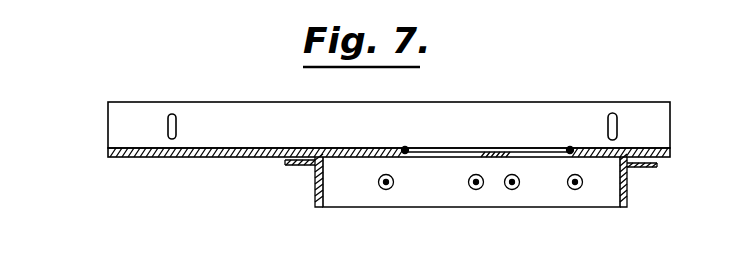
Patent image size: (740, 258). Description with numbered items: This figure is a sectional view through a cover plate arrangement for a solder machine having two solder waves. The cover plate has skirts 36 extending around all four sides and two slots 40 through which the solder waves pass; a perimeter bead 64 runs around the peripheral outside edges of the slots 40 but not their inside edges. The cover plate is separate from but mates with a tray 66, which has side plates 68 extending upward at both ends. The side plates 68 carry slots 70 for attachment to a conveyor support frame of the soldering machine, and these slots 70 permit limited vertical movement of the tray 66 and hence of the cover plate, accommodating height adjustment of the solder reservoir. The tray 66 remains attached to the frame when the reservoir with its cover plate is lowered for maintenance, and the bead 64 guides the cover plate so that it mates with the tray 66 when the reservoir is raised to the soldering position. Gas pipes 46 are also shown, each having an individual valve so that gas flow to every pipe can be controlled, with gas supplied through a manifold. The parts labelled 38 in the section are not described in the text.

The skirts 36 is at (316, 196).
The mounting bracket 38 is at (292, 164).
The slots 40 is at (447, 156).
The gas pipes 46 is at (386, 189).
The perimeter bead 64 is at (405, 150).
The tray 66 is at (180, 158).
The side plates 68 is at (125, 130).
The slots 70 is at (168, 125).